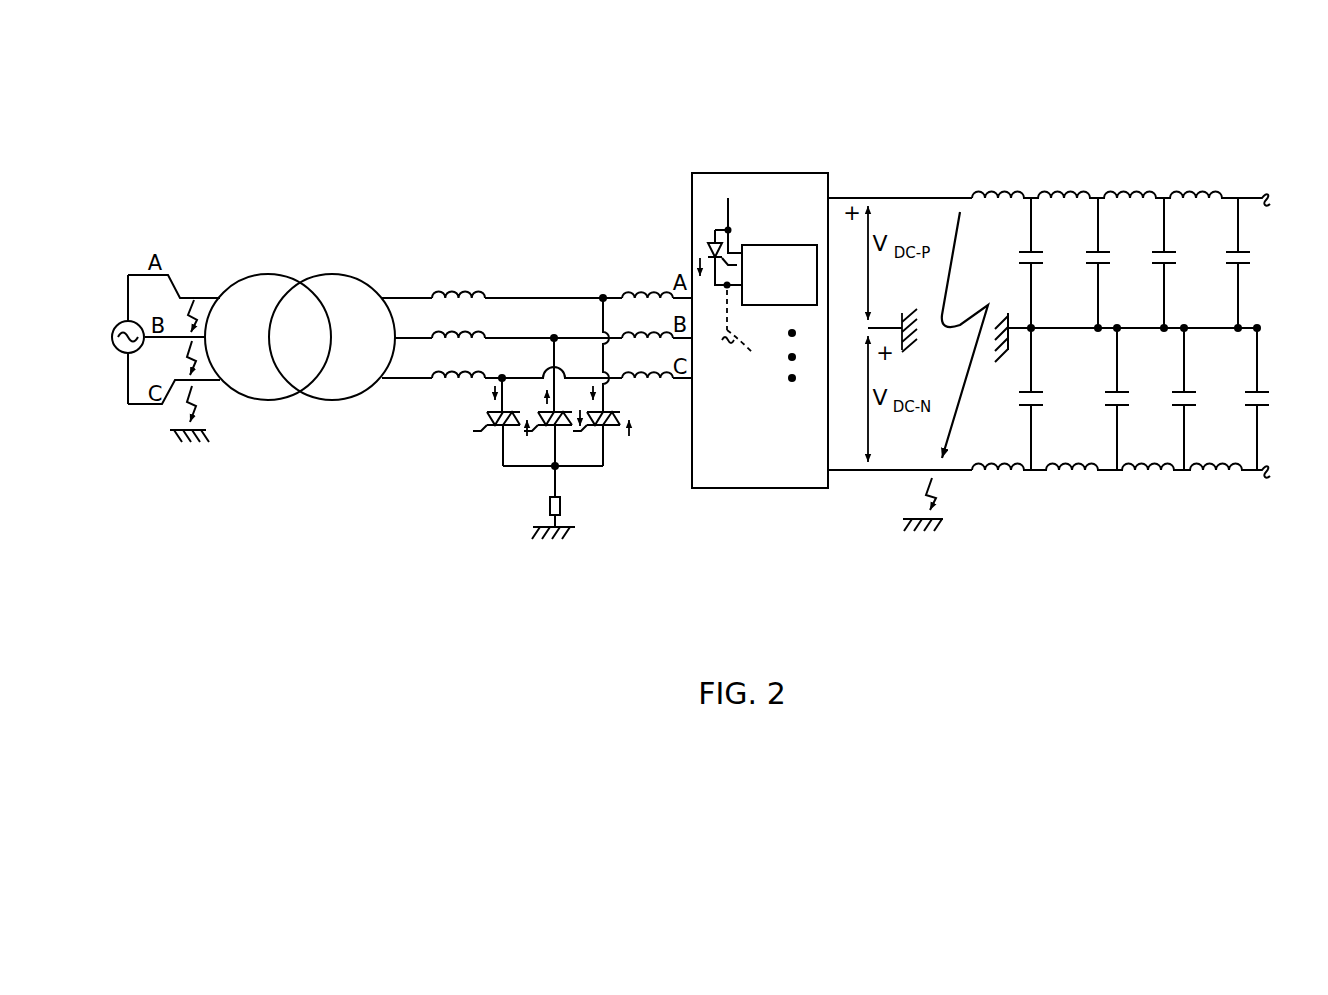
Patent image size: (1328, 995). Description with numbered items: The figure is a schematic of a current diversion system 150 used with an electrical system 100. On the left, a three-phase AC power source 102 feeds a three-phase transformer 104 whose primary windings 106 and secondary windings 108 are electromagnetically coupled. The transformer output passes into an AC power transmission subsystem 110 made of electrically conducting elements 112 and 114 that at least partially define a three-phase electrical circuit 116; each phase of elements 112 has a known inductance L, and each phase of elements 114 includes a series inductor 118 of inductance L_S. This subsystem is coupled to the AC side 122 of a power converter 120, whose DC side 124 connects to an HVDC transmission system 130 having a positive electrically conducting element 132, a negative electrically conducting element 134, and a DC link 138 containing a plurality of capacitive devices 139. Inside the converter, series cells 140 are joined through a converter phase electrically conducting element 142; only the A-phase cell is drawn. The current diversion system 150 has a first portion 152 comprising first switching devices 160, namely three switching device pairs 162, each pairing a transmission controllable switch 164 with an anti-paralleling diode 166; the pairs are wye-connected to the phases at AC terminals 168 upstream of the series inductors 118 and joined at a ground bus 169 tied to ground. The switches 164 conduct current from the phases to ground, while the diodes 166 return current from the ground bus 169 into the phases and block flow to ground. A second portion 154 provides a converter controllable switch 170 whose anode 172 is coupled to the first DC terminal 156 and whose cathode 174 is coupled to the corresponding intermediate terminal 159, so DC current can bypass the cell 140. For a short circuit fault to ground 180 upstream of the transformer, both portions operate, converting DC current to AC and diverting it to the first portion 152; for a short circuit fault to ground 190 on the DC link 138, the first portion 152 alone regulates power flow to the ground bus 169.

The electrical system 100 is at (368, 155).
The AC power source 102 is at (127, 320).
The three-phase transformer 104 is at (300, 334).
The primary windings 106 is at (277, 388).
The secondary windings 108 is at (340, 392).
The AC power transmission subsystem 110 is at (535, 490).
The electrically conducting elements 112 is at (470, 250).
The electrically conducting elements 114 is at (648, 250).
The three-phase electrical circuit 116 is at (535, 490).
The series inductor 118 is at (663, 380).
The power converter 120 is at (796, 255).
The AC side 122 is at (705, 160).
The DC side 124 is at (803, 260).
The HVDC transmission system 130 is at (1139, 293).
The positive electrically conducting element 132 is at (920, 196).
The negative electrically conducting element 134 is at (885, 473).
The DC link 138 is at (1103, 178).
The capacitive devices 139 is at (1250, 250).
The cells 140 is at (803, 252).
The converter phase electrically conducting element 142 is at (752, 352).
The current diversion system 150 is at (586, 374).
The first portion 152 is at (484, 514).
The second portion 154 is at (717, 208).
The first DC terminal 156 is at (730, 230).
The intermediate terminals 159 is at (730, 300).
The first switching devices 160 is at (480, 416).
The switching device pairs 162 is at (550, 440).
The transmission controllable switch 164 is at (488, 412).
The anti-paralleling diode 166 is at (489, 432).
The AC terminals 168 is at (502, 376).
The ground bus 169 is at (587, 468).
The converter controllable switch 170 is at (707, 256).
The anode 172 is at (712, 240).
The cathode 174 is at (724, 345).
The short circuit fault to ground 180 is at (174, 416).
The short circuit fault to ground 190 is at (946, 500).